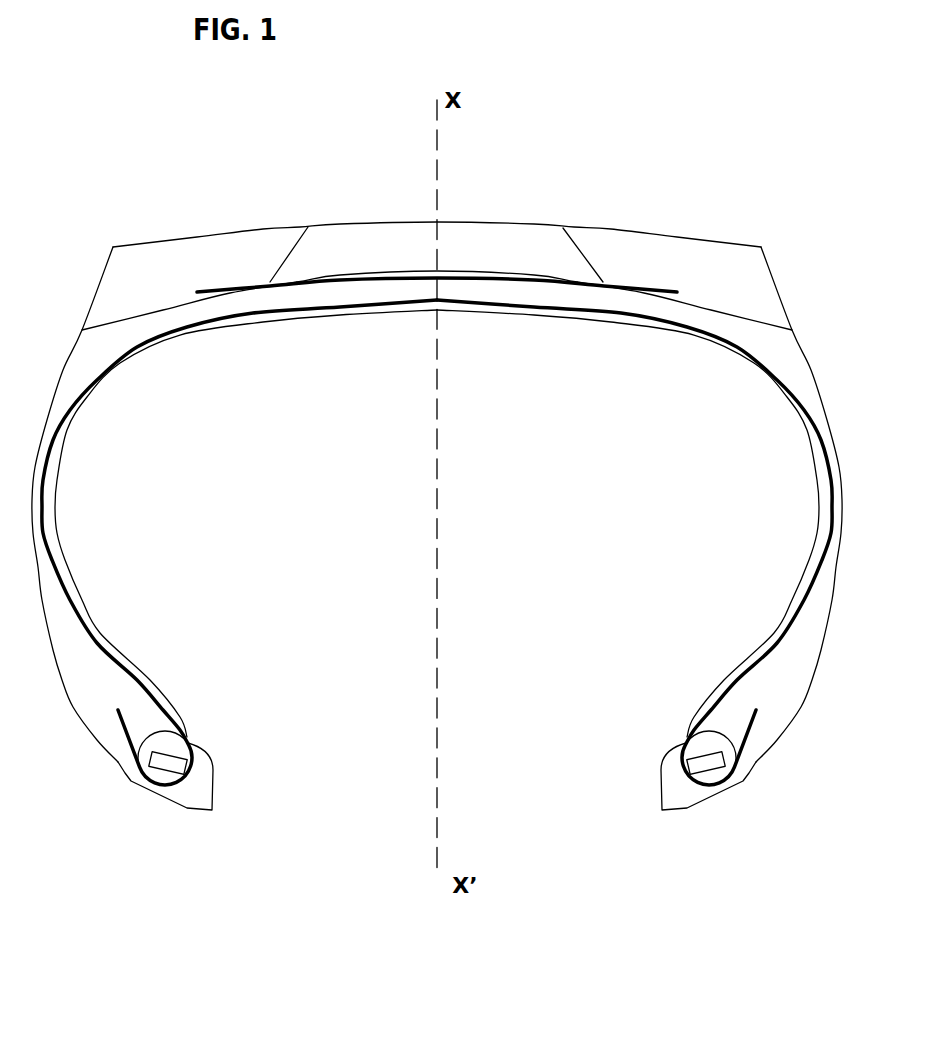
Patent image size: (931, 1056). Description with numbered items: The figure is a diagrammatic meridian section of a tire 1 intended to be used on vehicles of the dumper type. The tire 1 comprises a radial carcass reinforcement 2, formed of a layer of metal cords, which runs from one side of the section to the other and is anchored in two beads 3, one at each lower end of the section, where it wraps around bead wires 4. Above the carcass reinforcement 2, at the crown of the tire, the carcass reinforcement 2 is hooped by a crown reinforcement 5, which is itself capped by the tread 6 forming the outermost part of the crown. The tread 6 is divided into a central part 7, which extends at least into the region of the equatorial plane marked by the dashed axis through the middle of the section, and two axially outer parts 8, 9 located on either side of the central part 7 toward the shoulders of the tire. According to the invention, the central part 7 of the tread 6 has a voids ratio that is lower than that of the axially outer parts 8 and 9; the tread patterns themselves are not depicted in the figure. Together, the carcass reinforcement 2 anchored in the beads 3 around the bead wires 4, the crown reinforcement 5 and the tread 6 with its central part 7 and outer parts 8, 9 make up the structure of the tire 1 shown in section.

The tire 1 is at (120, 200).
The radial carcass reinforcement 2 is at (43, 510).
The beads 3 is at (197, 790).
The bead wires 4 is at (173, 755).
The crown reinforcement 5 is at (317, 281).
The tread 6 is at (616, 237).
The central part 7 is at (360, 228).
The axially outer part 8 is at (210, 253).
The axially outer part 9 is at (707, 270).